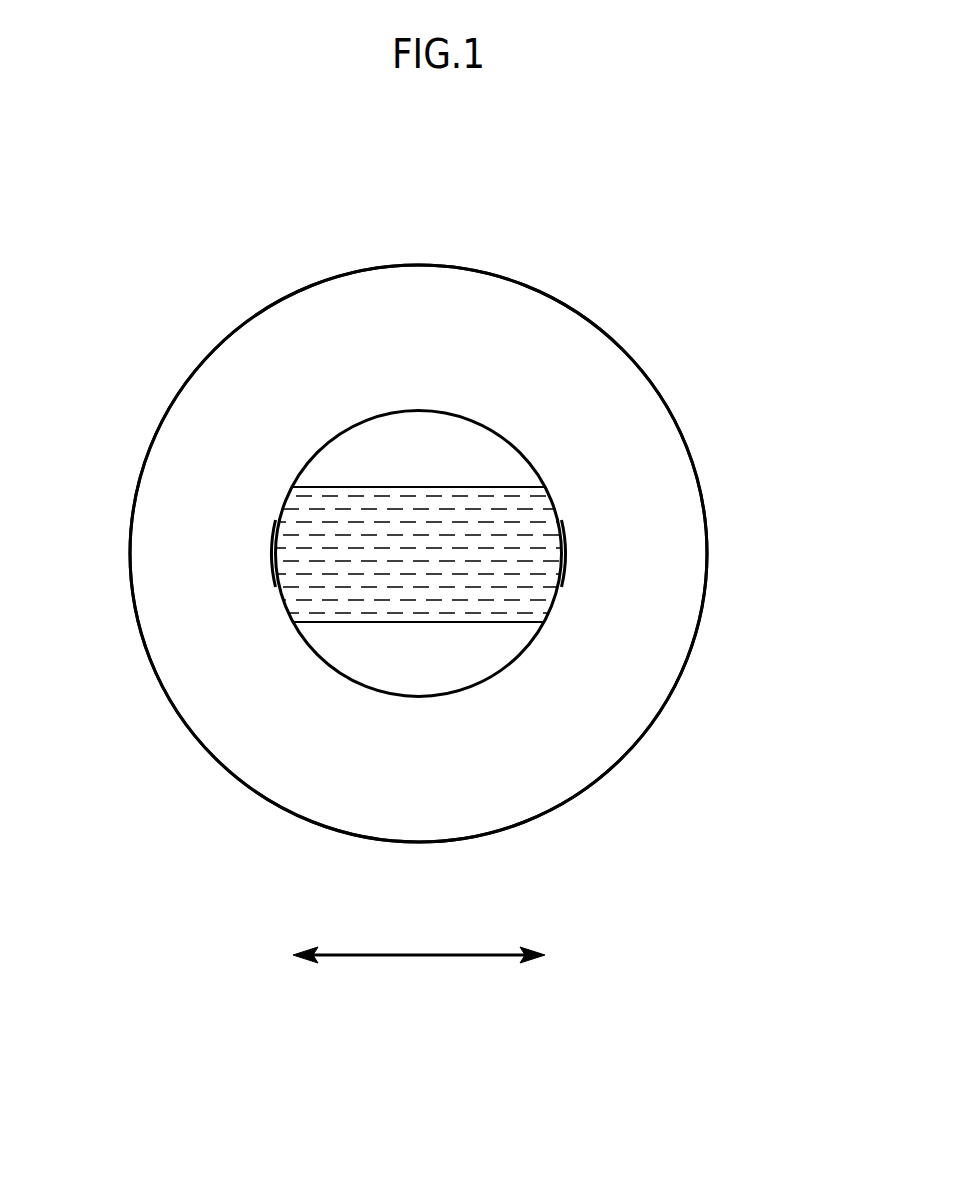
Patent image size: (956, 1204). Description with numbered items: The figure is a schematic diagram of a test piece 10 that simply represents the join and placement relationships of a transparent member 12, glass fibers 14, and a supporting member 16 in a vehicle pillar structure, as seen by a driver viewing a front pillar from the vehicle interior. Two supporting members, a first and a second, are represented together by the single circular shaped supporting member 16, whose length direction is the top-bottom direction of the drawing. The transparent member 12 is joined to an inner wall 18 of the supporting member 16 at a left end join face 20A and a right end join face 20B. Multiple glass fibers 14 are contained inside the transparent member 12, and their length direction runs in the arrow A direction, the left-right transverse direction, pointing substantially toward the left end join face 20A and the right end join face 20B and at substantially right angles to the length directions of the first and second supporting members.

The test piece 10 is at (480, 240).
The transparent member 12 is at (353, 487).
The glass fibers 14 is at (385, 573).
The supporting member 16 is at (528, 324).
The inner wall 18 is at (503, 440).
The left end join face 20A is at (273, 550).
The right end join face 20B is at (563, 553).
The arrow A direction A is at (415, 958).